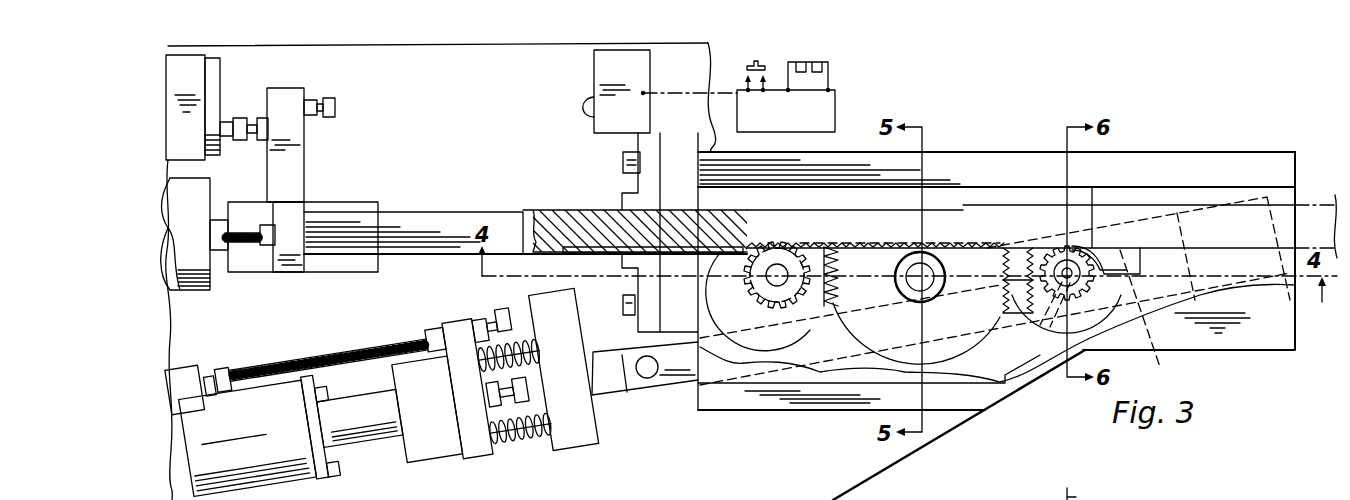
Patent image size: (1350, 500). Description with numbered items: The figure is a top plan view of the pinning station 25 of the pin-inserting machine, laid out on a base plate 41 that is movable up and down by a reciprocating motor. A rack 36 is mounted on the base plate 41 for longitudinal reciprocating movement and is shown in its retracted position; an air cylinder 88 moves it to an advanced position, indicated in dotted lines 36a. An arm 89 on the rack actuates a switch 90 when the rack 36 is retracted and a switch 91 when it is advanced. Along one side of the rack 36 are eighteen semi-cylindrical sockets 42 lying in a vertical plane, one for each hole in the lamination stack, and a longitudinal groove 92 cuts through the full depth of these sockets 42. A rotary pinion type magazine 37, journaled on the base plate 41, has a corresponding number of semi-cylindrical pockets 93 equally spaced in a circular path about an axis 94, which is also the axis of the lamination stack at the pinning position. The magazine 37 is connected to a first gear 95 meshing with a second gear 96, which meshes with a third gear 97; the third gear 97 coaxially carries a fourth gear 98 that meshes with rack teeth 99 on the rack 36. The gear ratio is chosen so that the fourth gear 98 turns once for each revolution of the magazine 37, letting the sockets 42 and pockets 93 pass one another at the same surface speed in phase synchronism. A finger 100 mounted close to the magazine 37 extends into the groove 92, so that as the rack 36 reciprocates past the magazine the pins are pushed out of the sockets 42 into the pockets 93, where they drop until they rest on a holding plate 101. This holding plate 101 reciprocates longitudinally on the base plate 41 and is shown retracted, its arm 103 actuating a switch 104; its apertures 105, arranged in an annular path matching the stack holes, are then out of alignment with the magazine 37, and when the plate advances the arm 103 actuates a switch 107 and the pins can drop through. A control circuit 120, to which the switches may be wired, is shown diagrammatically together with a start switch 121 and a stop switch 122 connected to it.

The pinning station 25 is at (993, 139).
The rack 36 is at (732, 213).
The advanced position of rack 36a is at (1318, 220).
The rotary pinion type magazine 37 is at (1085, 285).
The base plate 41 is at (1228, 345).
The semi-cylindrical sockets 42 is at (904, 276).
The air cylinder 88 is at (194, 288).
The arm 89 is at (300, 153).
The switch 90 is at (212, 88).
The switch 91 is at (643, 81).
The longitudinal groove 92 is at (1005, 247).
The semi-cylindrical pockets 93 is at (1013, 296).
The axis 94 is at (1083, 494).
The first gear 95 is at (1100, 318).
The second gear 96 is at (957, 357).
The third gear 97 is at (787, 328).
The fourth gear 98 is at (750, 288).
The rack teeth 99 is at (776, 213).
The finger 100 is at (1090, 246).
The holding plate 101 is at (1160, 367).
The arm 103 is at (448, 335).
The switch 104 is at (190, 368).
The apertures 105 is at (1046, 318).
The switch 107 is at (572, 315).
The control circuit 120 is at (835, 110).
The start switch 121 is at (747, 69).
The stop switch 122 is at (828, 72).